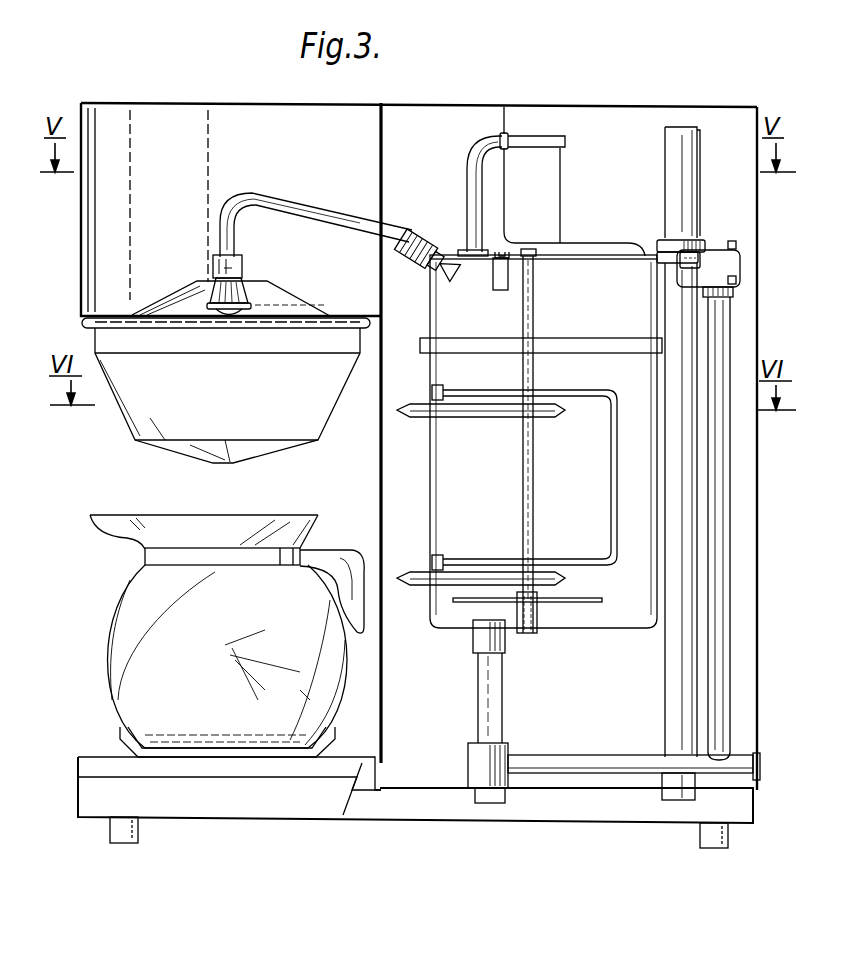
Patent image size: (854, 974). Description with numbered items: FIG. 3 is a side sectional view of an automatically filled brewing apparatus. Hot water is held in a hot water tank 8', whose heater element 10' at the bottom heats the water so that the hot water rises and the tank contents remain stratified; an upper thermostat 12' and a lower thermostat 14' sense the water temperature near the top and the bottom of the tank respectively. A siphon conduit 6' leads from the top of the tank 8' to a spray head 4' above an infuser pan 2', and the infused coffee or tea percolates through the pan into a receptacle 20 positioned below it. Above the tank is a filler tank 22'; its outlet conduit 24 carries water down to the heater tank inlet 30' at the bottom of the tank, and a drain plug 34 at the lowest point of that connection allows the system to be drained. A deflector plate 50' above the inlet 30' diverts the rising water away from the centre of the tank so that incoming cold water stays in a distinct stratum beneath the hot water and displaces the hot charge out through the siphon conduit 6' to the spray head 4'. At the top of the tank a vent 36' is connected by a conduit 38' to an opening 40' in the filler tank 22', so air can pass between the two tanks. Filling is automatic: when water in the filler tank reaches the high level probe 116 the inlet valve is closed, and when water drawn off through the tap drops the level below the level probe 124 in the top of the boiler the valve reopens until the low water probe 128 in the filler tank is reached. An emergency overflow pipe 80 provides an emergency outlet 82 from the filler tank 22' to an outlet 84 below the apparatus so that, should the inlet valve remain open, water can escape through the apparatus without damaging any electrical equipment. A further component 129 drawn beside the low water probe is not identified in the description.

The infuser pan 2' is at (229, 395).
The spray head 4' is at (265, 285).
The siphon conduit 6' is at (340, 224).
The hot water tank 8' is at (527, 441).
The heater element 10' is at (524, 465).
The upper thermostat 12' is at (481, 432).
The lower thermostat 14' is at (481, 554).
The receptacle 20 is at (238, 639).
The filler tank 22' is at (574, 181).
The conduit 24 is at (717, 544).
The inlet 30' is at (462, 681).
The drain plug 34 is at (491, 803).
The vent 36' is at (517, 224).
The conduit 38' is at (459, 196).
The inlet 40' is at (565, 148).
The deflector plate 50' is at (551, 612).
The emergency overflow pipe 80 is at (700, 156).
The emergency outlet 82 is at (677, 127).
The outlet 84 is at (673, 793).
The high level probe 116 is at (499, 135).
The level probe 124 is at (508, 278).
The low water probe 128 is at (729, 242).
The valve housing 129 is at (740, 279).